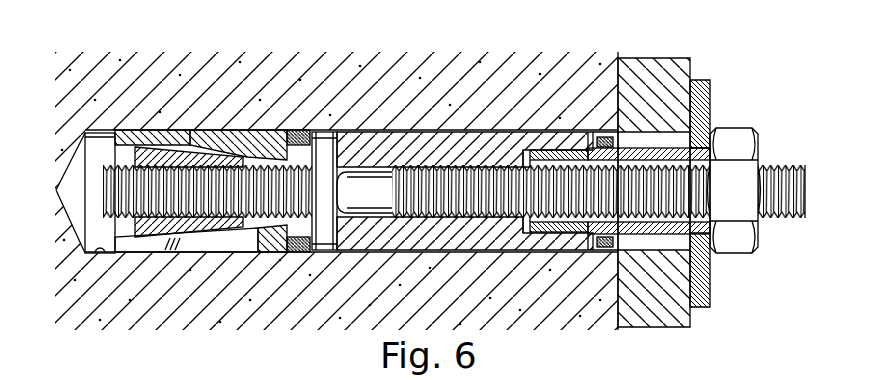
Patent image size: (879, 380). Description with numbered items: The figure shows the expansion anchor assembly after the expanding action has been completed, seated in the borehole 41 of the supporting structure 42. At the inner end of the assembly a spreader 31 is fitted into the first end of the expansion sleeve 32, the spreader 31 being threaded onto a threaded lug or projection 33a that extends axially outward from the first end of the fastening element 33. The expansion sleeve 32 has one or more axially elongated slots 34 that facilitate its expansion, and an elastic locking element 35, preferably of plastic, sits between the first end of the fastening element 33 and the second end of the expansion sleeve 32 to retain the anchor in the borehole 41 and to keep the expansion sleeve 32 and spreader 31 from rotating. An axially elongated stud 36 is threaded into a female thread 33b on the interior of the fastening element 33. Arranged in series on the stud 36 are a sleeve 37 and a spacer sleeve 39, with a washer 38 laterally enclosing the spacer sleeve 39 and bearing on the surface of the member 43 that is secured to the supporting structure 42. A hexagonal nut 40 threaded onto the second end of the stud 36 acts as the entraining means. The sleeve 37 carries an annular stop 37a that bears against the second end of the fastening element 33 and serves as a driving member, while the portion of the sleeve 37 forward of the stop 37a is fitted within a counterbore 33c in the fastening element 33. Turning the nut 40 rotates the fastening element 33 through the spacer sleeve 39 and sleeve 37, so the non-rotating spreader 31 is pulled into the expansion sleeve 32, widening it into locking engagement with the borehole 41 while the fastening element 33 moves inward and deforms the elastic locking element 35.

The spreader 31 is at (148, 140).
The expansion sleeve 32 is at (222, 132).
The fastening element 33 is at (371, 123).
The threaded lug or projection 33a is at (183, 163).
The female thread 33b is at (403, 167).
The counterbore 33c is at (522, 155).
The axially elongated slot 34 is at (223, 252).
The elastic locking element 35 is at (300, 130).
The stud 36 is at (783, 220).
The sleeve 37 is at (552, 150).
The stop 37a is at (603, 137).
The washer 38 is at (703, 100).
The spacer sleeve 39 is at (652, 148).
The hexagonal nut 40 is at (753, 140).
The borehole 41 is at (101, 253).
The supporting structure 42 is at (162, 312).
The member 43 is at (688, 318).